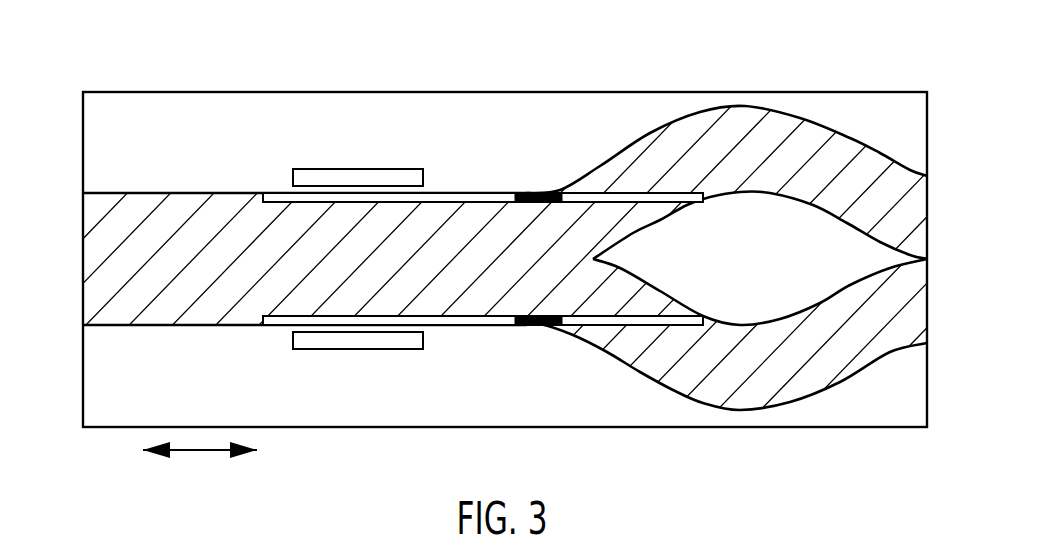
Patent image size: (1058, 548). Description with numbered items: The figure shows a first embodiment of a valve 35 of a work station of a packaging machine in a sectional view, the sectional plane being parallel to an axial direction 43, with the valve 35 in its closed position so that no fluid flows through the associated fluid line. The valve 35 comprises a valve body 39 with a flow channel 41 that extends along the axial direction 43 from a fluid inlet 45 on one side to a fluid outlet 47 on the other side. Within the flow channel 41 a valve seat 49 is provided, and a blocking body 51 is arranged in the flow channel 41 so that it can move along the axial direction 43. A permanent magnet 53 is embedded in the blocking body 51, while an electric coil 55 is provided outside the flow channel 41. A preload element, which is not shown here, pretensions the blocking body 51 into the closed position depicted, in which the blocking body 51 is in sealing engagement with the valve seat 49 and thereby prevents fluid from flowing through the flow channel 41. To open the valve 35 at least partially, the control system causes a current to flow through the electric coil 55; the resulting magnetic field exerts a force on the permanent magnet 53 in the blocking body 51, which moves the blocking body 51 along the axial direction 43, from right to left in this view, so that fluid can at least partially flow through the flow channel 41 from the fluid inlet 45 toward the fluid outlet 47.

The valve 35 is at (491, 78).
The valve body 39 is at (288, 106).
The flow channel 41 is at (240, 224).
The axial direction 43 is at (197, 455).
The fluid inlet 45 is at (72, 222).
The fluid outlet 47 is at (939, 238).
The valve seat 49 is at (748, 308).
The blocking body 51 is at (437, 192).
The permanent magnet 53 is at (530, 192).
The electric coil 55 is at (366, 170).